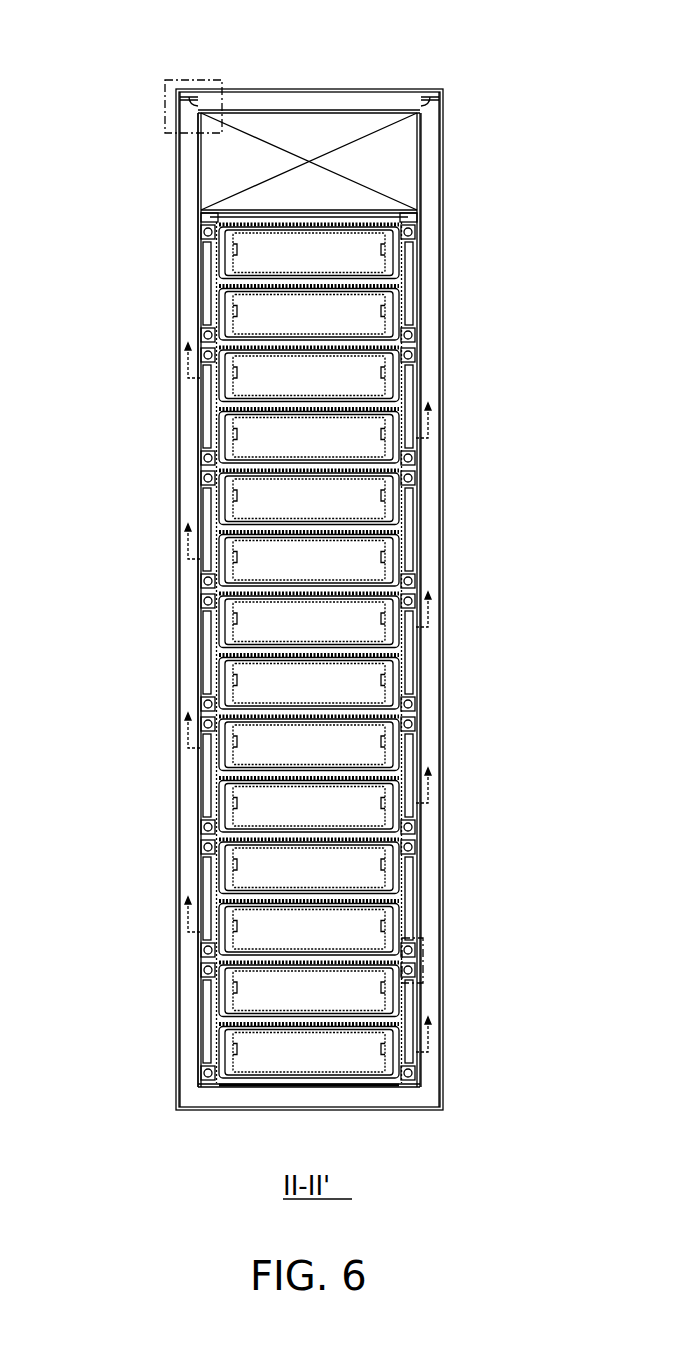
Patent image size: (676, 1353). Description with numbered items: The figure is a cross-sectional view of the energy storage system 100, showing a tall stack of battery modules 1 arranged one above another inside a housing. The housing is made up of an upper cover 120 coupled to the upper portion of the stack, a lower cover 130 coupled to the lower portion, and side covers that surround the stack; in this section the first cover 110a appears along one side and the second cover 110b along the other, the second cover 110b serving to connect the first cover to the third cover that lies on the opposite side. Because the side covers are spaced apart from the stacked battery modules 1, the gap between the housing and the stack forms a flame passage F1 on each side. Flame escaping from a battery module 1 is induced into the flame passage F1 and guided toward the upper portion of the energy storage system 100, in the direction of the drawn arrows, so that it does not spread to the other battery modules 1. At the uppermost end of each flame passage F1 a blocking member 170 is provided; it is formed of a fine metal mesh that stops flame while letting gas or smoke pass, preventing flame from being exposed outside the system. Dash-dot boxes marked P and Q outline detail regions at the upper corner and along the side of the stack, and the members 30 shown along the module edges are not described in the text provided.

The energy storage system 100 is at (290, 20).
The upper cover 120 is at (339, 88).
The lower cover 130 is at (377, 1110).
The first cover 110a is at (176, 252).
The second cover 110b is at (443, 250).
The flame passage F1 is at (183, 181).
The blocking member 170 is at (185, 112).
The region P is at (183, 80).
The region Q is at (423, 972).
The battery module 1 is at (403, 403).
The fastening member 30 is at (418, 522).